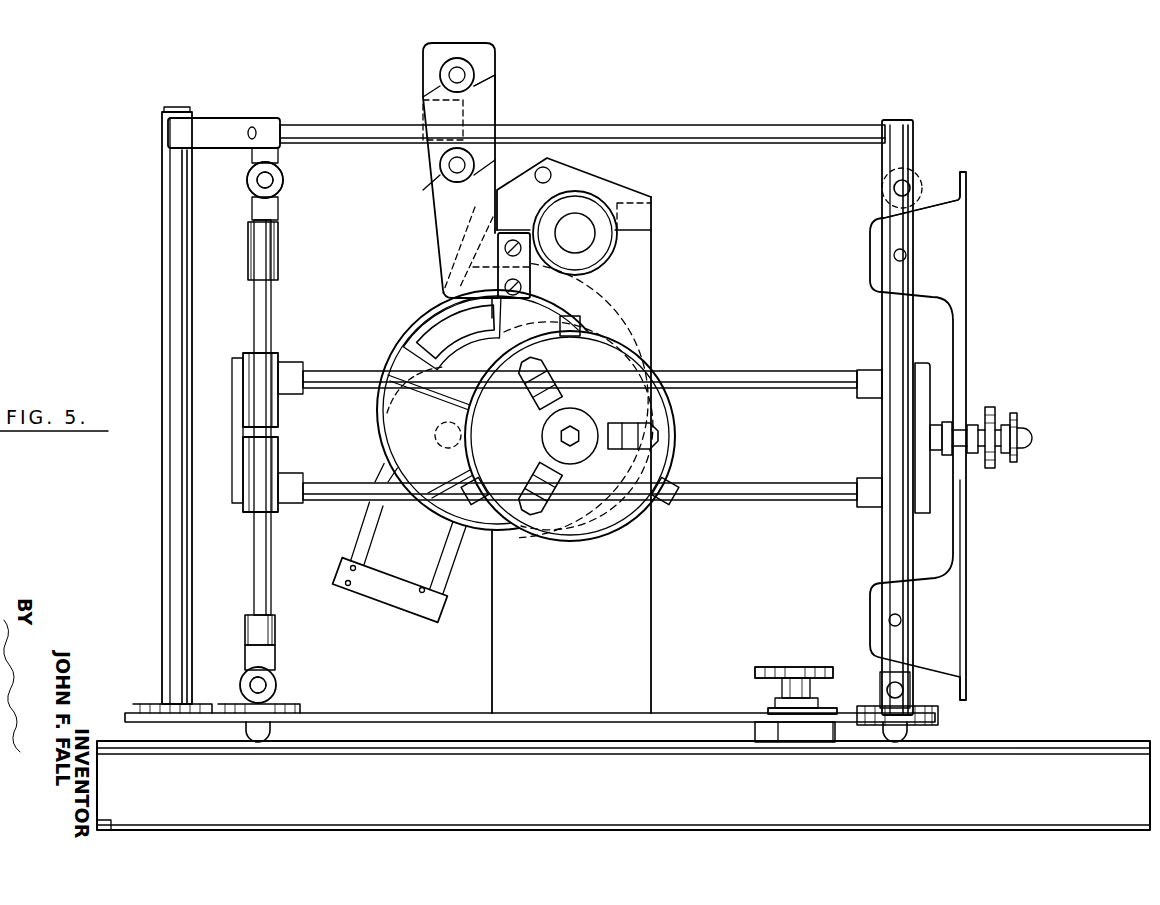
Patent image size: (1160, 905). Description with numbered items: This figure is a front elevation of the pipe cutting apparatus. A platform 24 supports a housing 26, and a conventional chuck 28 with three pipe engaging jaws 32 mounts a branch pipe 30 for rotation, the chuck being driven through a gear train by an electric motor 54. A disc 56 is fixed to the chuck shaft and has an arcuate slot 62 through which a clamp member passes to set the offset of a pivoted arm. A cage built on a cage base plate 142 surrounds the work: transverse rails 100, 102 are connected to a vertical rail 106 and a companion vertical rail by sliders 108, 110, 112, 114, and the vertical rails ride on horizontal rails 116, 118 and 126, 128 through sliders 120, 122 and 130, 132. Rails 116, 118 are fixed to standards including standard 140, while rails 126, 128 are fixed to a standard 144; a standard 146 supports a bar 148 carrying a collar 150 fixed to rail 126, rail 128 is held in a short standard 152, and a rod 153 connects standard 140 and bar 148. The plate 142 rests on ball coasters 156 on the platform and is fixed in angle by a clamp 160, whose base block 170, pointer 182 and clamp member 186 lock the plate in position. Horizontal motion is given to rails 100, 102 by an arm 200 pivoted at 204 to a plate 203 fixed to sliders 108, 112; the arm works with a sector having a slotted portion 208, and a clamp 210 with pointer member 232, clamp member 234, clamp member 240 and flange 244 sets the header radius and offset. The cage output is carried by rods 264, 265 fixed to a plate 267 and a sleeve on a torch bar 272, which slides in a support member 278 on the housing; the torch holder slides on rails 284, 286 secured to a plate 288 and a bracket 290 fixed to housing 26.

The platform 24 is at (1048, 743).
The housing 26 is at (652, 298).
The chuck 28 is at (628, 394).
The branch pipe 30 is at (674, 444).
The pipe engaging jaws 32 is at (530, 374).
The electric motor 54 is at (600, 248).
The disc 56 is at (412, 329).
The arcuate slot 62 is at (496, 312).
The transverse rail 100 is at (339, 377).
The transverse rail 102 is at (338, 482).
The vertical rail 106 is at (272, 305).
The slider 108 is at (866, 372).
The slider 110 is at (292, 362).
The slider 112 is at (866, 508).
The slider 114 is at (297, 504).
The horizontal rail 116 is at (894, 189).
The horizontal rail 118 is at (898, 678).
The slider 120 is at (912, 180).
The slider 122 is at (920, 708).
The horizontal rail 126 is at (257, 181).
The horizontal rail 128 is at (264, 682).
The slider 130 is at (278, 172).
The slider 132 is at (252, 674).
The standard 140 is at (886, 312).
The cage base plate 142 is at (396, 712).
The standard 144 is at (279, 269).
The standard 146 is at (170, 250).
The bar 148 is at (220, 126).
The collar 150 is at (277, 182).
The short standard 152 is at (275, 688).
The rod 153 is at (798, 129).
The ball coasters 156 is at (260, 740).
The clamp 160 is at (752, 631).
The base block 170 is at (766, 725).
The pointer 182 is at (832, 710).
The clamp member 186 is at (796, 667).
The arm 200 is at (945, 425).
The plate 203 is at (933, 382).
The pivot 204 is at (937, 460).
The slotted portion 208 is at (963, 546).
The clamp 210 is at (1060, 421).
The pointer member 232 is at (961, 454).
The clamp member 234 is at (991, 468).
The clamp member 240 is at (1018, 452).
The flange 244 is at (990, 413).
The rod 264 is at (448, 566).
The rod 265 is at (358, 532).
The plate 267 is at (390, 600).
The torch bar 272 is at (552, 174).
The support member 278 is at (650, 194).
The rail 284 is at (460, 76).
The rail 286 is at (450, 166).
The plate 288 is at (480, 94).
The bracket 290 is at (427, 62).